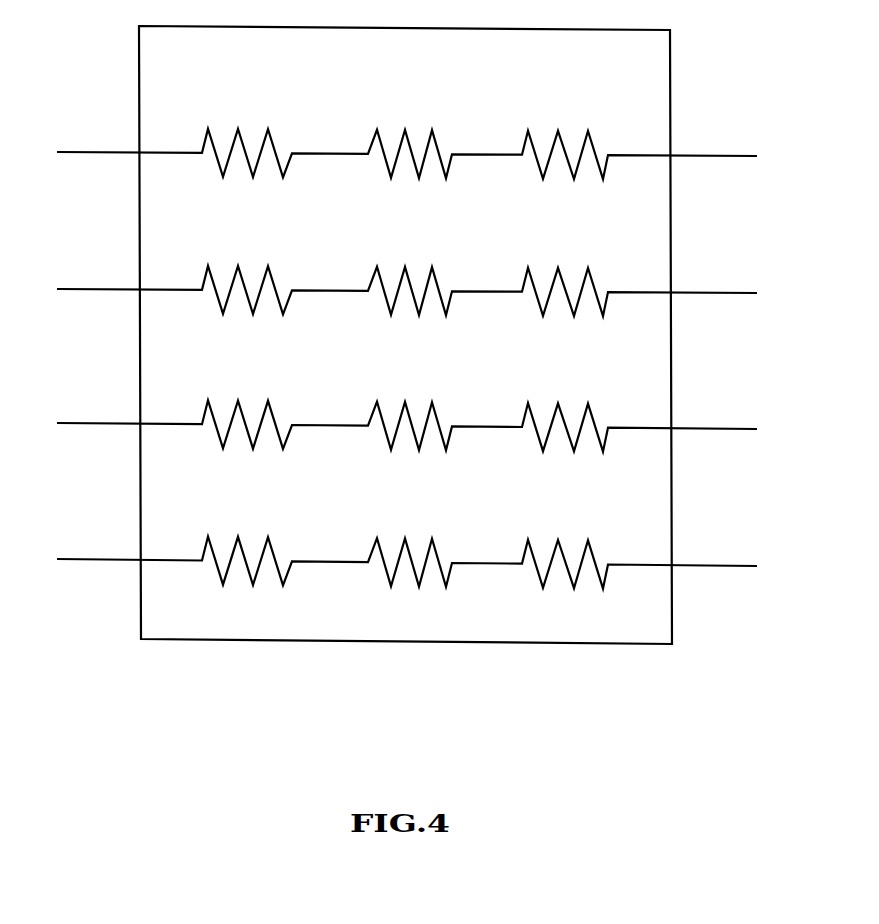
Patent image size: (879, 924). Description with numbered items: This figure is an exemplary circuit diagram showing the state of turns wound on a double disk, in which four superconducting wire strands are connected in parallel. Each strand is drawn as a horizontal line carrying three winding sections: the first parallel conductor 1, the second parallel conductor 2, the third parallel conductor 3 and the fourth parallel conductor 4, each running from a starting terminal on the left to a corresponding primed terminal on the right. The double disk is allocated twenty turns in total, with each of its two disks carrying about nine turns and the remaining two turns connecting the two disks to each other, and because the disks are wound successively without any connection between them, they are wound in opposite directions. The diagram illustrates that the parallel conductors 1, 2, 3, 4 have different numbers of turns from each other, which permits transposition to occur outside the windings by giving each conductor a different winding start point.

The first parallel conductor 1 is at (408, 130).
The second parallel conductor 2 is at (408, 267).
The third parallel conductor 3 is at (408, 402).
The fourth parallel conductor 4 is at (408, 538).